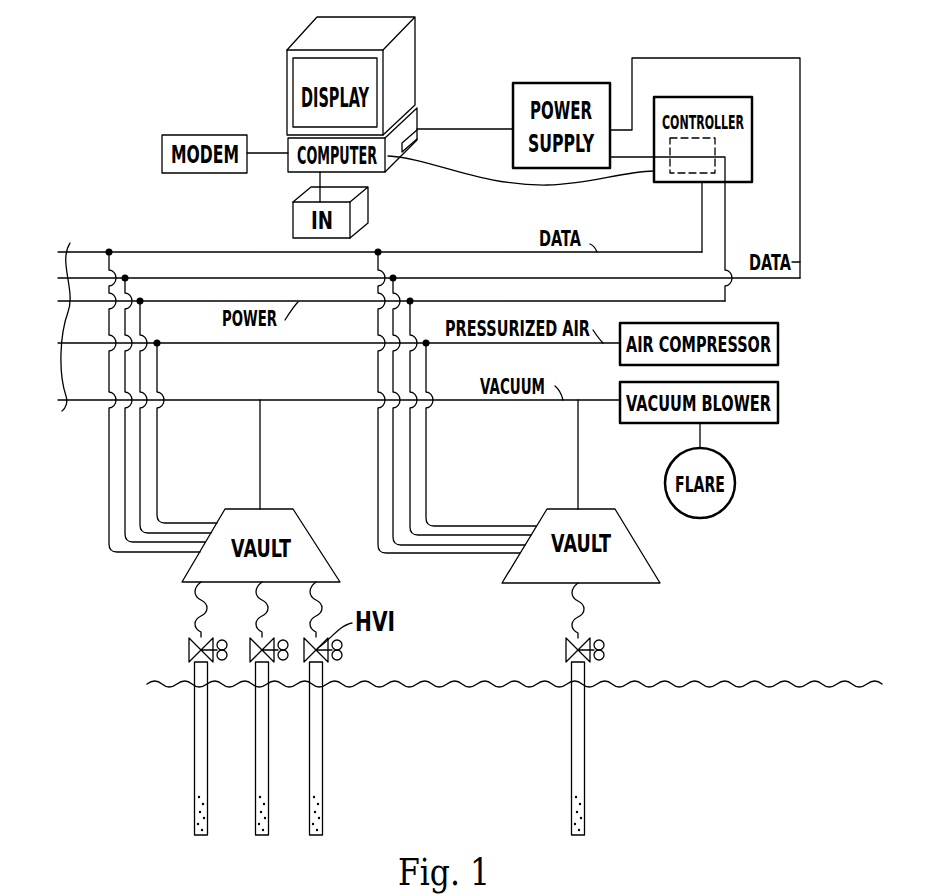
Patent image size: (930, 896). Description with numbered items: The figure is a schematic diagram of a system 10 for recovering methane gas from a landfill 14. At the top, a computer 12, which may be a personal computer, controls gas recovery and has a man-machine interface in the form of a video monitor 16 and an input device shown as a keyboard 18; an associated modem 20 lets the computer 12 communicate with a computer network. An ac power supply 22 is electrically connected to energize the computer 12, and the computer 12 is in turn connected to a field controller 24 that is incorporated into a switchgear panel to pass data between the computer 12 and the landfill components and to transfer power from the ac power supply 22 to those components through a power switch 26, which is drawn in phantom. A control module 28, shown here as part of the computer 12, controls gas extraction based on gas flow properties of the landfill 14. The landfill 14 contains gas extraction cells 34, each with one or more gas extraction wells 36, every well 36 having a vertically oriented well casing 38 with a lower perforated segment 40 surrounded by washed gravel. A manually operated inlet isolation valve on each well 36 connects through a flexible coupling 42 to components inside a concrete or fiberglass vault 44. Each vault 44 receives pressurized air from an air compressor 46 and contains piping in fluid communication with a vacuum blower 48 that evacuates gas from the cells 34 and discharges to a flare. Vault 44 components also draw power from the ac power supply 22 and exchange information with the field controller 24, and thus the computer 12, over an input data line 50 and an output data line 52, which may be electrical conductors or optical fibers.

The system 10 is at (146, 63).
The computer 12 is at (288, 148).
The landfill 14 is at (483, 662).
The video monitor 16 is at (287, 62).
The keyboard 18 is at (293, 217).
The modem 20 is at (195, 135).
The ac power supply 22 is at (568, 83).
The field controller 24 is at (752, 100).
The power switch 26 is at (715, 140).
The control module 28 is at (418, 125).
The gas extraction cell 34 is at (415, 552).
The gas extraction well 36 is at (193, 673).
The well casing 38 is at (322, 737).
The lower perforated segment 40 is at (322, 808).
The flexible coupling 42 is at (322, 588).
The vault 44 is at (307, 525).
The air compressor 46 is at (778, 343).
The vacuum blower 48 is at (778, 400).
The input data line 50 is at (167, 252).
The output data line 52 is at (212, 278).